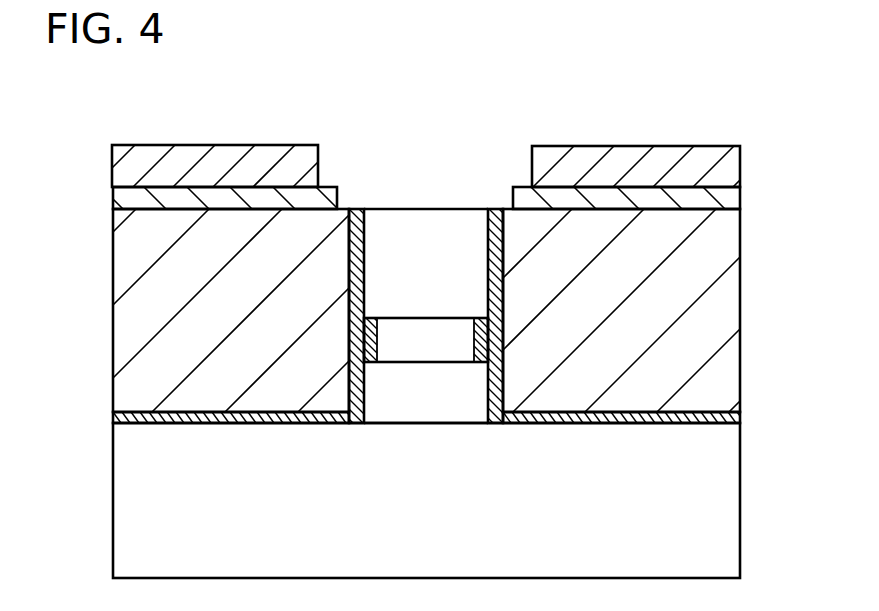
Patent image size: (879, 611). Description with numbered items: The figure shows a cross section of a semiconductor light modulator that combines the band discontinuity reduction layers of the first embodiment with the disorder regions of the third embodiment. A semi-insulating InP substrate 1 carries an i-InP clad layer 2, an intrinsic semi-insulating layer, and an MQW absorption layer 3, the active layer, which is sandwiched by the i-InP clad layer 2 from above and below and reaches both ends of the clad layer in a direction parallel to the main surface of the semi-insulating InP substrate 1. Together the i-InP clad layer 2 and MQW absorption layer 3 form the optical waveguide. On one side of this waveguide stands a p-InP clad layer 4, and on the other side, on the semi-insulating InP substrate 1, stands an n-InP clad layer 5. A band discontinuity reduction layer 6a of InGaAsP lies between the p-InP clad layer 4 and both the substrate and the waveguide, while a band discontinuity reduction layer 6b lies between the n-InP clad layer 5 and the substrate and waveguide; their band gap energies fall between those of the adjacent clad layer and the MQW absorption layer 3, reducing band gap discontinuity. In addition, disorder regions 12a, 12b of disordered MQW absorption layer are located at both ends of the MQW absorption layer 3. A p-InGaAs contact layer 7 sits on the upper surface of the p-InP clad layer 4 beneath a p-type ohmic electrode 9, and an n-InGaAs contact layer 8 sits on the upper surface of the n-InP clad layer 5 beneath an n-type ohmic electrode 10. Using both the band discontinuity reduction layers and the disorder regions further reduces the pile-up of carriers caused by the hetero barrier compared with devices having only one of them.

The semi-insulating InP substrate 1 is at (668, 502).
The i-InP clad layer 2 is at (452, 263).
The MQW absorption layer 3 is at (445, 332).
The p-InP clad layer 4 is at (685, 292).
The n-InP clad layer 5 is at (160, 288).
The band discontinuity reduction layer 6a is at (720, 420).
The band discontinuity reduction layer 6b is at (117, 418).
The p-InGaAs contact layer 7 is at (717, 198).
The n-InGaAs contact layer 8 is at (133, 199).
The p-type ohmic electrode 9 is at (700, 173).
The n-type ohmic electrode 10 is at (140, 165).
The disorder region 12a is at (495, 352).
The disorder region 12b is at (349, 326).